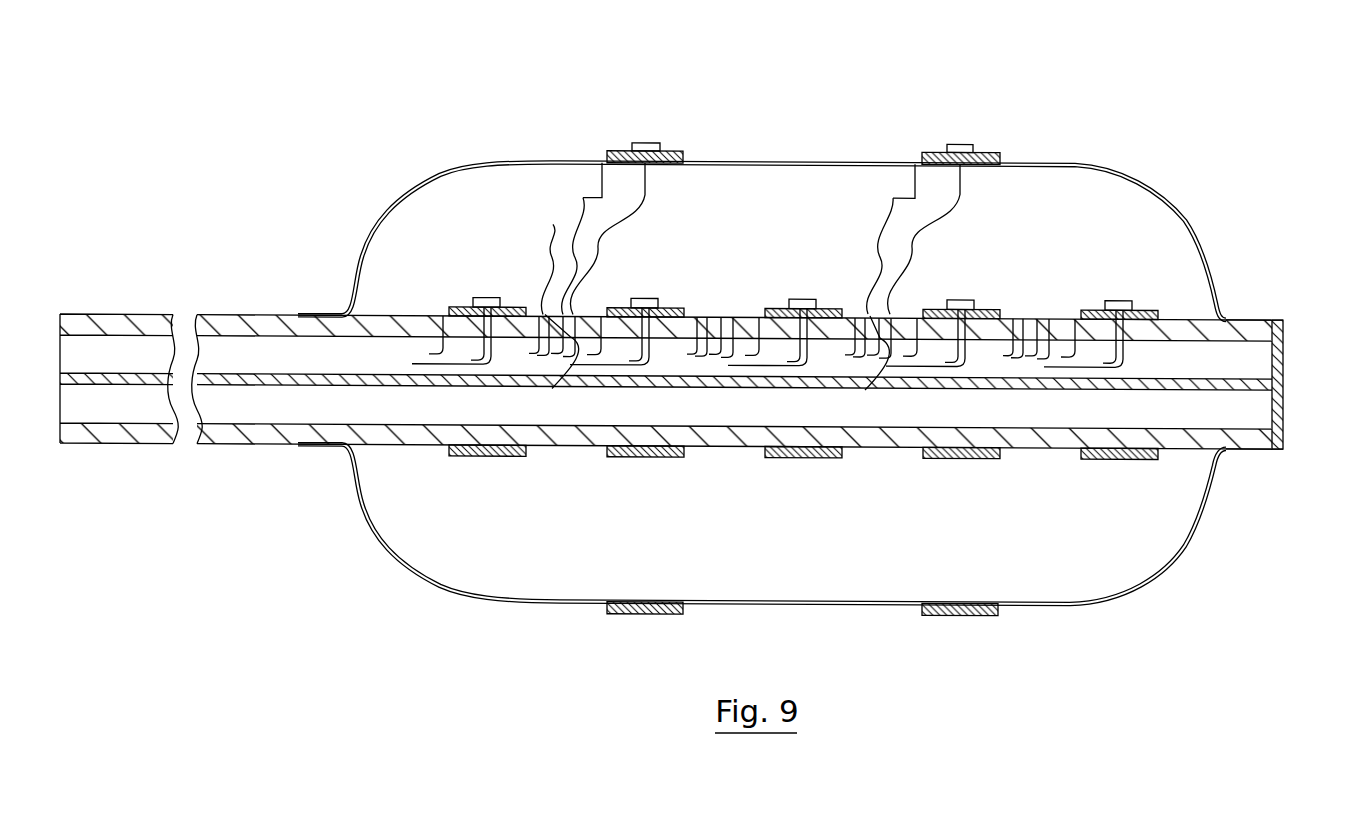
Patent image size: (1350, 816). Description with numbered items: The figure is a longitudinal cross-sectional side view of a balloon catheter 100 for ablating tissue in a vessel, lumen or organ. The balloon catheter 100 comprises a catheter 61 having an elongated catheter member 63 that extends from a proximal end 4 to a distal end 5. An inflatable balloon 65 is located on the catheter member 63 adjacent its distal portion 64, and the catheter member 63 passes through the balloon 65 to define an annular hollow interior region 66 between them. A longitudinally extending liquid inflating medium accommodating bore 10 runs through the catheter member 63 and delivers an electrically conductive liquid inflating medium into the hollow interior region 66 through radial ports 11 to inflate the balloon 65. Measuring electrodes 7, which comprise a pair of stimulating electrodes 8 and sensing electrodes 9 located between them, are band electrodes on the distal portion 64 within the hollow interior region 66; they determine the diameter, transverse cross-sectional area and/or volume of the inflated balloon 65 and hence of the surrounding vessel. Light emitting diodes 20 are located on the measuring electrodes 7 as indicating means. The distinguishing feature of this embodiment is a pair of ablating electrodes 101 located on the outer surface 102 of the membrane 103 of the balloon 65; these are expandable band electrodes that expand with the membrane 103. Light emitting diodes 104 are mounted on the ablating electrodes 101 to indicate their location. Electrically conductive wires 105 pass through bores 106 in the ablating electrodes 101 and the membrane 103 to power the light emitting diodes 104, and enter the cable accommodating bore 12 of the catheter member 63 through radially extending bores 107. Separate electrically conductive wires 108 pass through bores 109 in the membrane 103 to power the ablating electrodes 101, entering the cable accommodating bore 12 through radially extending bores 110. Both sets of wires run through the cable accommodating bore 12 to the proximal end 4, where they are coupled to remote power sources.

The balloon catheter 100 is at (383, 146).
The proximal end 4 is at (56, 316).
The cable accommodating bore 12 is at (233, 352).
The catheter member 63 is at (275, 316).
The liquid inflating medium accommodating bore 10 is at (212, 413).
The catheter 61 is at (328, 437).
The light emitting diodes 20 is at (472, 296).
The measuring electrodes 7 is at (515, 303).
The sensing electrodes 9 is at (618, 303).
The radially extending bores 110 is at (767, 341).
The radially extending bores 107 is at (553, 222).
The electrically conductive wires 108 is at (583, 197).
The bores 109 is at (603, 156).
The bores 106 is at (655, 147).
The ablating electrodes 101 is at (672, 156).
The light emitting diodes 104 is at (973, 142).
The electrically conductive wires 105 is at (970, 203).
The inflatable balloon 65 is at (1033, 160).
The annular hollow interior region 66 is at (1122, 205).
The stimulating electrodes 8 is at (1157, 308).
The distal end 5 is at (1280, 408).
The radial ports 11 is at (566, 437).
The outer surface 102 is at (498, 603).
The membrane 103 is at (828, 600).
The distal portion 64 is at (1187, 437).